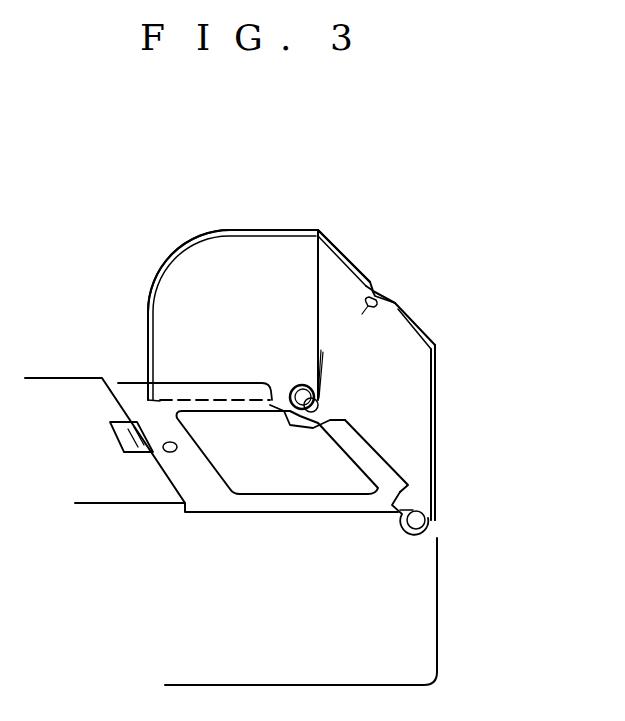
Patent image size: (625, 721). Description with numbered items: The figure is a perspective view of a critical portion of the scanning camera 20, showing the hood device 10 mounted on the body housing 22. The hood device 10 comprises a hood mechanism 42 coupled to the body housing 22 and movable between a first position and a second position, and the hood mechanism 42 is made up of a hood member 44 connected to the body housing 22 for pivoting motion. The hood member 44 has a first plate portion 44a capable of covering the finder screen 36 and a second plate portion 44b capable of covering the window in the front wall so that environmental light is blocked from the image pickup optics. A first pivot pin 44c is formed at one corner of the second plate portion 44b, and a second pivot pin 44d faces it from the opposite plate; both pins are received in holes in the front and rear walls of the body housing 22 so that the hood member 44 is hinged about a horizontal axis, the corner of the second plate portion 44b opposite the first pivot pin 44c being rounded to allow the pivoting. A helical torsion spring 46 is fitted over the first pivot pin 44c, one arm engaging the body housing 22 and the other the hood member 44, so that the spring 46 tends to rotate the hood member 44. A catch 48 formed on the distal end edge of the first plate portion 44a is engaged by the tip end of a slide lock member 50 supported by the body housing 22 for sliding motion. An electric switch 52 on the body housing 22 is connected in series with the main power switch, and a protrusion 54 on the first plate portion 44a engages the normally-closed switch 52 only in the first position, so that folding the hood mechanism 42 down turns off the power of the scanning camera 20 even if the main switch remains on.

The hood device 10 is at (355, 228).
The scanning camera 20 is at (493, 598).
The body housing 22 is at (435, 632).
The finder screen 36 is at (275, 482).
The hood mechanism 42 is at (437, 308).
The hood member 44 is at (288, 231).
The first plate portion 44a is at (437, 388).
The second plate portion 44b is at (180, 288).
The first pivot pin 44c is at (300, 386).
The second pivot pin 44d is at (398, 515).
The helical torsion spring 46 is at (318, 405).
The catch 48 is at (380, 291).
The slide lock member 50 is at (112, 440).
The electric switch 52 is at (170, 452).
The protrusion 54 is at (362, 312).